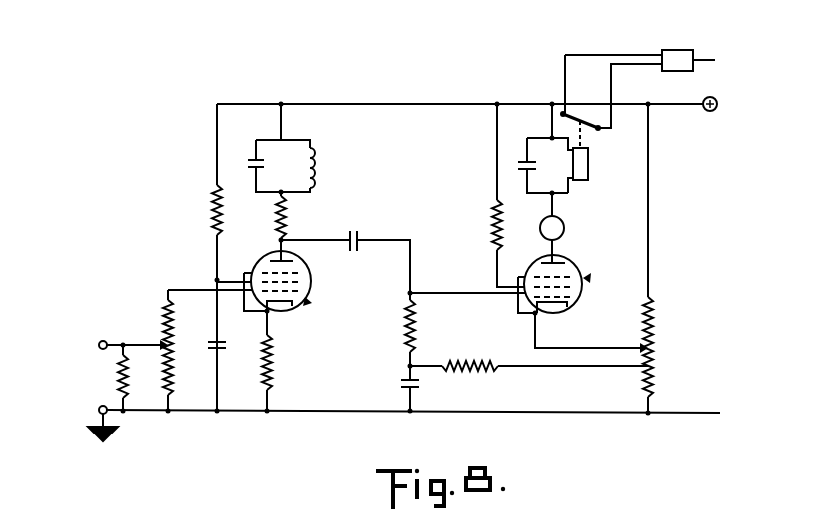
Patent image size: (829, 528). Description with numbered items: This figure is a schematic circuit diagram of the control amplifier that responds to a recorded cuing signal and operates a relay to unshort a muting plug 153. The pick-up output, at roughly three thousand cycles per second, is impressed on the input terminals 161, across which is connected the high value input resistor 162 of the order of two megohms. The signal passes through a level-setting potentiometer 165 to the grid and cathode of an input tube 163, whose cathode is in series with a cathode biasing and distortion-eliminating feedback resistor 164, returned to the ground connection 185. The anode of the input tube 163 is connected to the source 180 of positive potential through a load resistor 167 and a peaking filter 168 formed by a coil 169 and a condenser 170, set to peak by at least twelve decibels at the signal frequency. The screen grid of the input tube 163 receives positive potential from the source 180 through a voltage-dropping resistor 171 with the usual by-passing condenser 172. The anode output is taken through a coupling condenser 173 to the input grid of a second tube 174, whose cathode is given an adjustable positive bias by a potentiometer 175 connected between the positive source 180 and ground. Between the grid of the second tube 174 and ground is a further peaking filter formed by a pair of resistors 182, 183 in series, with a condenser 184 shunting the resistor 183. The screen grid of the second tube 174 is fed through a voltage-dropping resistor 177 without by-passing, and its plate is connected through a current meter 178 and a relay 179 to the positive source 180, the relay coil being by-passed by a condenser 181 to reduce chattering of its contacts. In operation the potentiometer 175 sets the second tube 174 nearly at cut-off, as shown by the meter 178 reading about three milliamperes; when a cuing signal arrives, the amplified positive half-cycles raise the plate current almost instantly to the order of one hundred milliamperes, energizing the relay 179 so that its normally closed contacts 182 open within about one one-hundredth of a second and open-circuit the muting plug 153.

The muting plug 153 is at (680, 50).
The input terminals 161 is at (101, 405).
The input resistor 162 is at (128, 382).
The input tube 163 is at (308, 302).
The cathode biasing and distortion-eliminating feedback resistor 164 is at (273, 370).
The level-setting potentiometer 165 is at (173, 357).
The load resistor 167 is at (287, 213).
The peaking filter 168 is at (289, 146).
The coil 169 is at (316, 160).
The condenser 170 is at (253, 167).
The voltage-dropping resistor 171 is at (212, 207).
The by-passing condenser 172 is at (224, 347).
The coupling condenser 173 is at (357, 232).
The second tube 174 is at (586, 277).
The potentiometer 175 is at (654, 328).
The voltage-dropping resistor 177 is at (492, 232).
The current meter 178 is at (565, 228).
The relay 179 is at (590, 165).
The source of positive potential 180 is at (715, 112).
The condenser 181 is at (533, 170).
The resistor 182 is at (415, 325).
The resistor 183 is at (472, 370).
The condenser 184 is at (402, 381).
The ground 185 is at (106, 431).